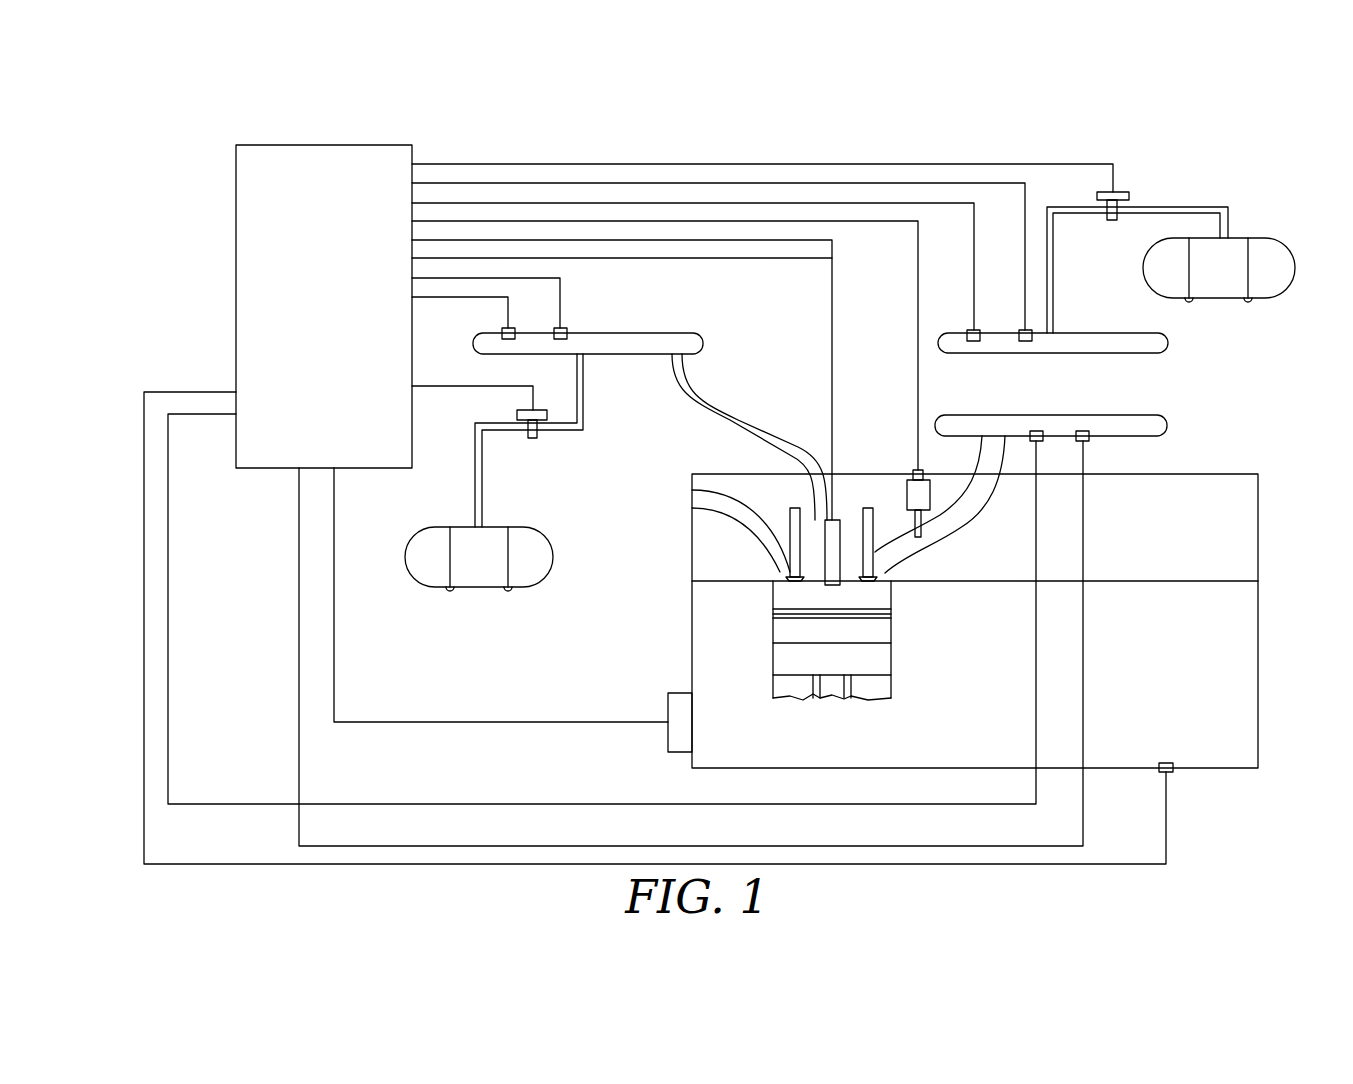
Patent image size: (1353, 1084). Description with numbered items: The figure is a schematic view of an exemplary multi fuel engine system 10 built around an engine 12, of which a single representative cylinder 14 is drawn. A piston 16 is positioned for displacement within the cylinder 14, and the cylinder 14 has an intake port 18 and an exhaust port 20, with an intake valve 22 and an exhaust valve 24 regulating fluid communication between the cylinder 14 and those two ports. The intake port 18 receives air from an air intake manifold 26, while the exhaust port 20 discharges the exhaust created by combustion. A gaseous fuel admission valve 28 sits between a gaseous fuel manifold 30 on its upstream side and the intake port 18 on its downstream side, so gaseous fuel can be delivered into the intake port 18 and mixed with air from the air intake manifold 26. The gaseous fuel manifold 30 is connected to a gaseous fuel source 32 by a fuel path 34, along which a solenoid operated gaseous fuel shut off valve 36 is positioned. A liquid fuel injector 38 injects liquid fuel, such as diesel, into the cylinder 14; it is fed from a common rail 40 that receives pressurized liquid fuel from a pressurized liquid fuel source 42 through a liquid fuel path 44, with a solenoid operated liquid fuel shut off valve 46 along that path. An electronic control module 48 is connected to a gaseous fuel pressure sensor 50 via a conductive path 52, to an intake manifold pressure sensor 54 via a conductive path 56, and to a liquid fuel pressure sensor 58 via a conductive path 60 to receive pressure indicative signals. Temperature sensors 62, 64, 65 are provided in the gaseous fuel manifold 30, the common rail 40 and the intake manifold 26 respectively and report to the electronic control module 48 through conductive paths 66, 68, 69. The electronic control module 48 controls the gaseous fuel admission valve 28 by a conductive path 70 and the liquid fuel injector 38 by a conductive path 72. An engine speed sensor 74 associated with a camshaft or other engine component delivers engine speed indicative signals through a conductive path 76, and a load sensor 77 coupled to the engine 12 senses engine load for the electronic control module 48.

The multi fuel engine system 10 is at (930, 150).
The engine 12 is at (1258, 692).
The cylinder 14 is at (893, 692).
The piston 16 is at (885, 622).
The intake port 18 is at (975, 512).
The exhaust port 20 is at (712, 505).
The intake valve 22 is at (893, 556).
The exhaust valve 24 is at (787, 557).
The air intake manifold 26 is at (1170, 432).
The gaseous fuel admission valve 28 is at (929, 490).
The gaseous fuel manifold 30 is at (1090, 333).
The gaseous fuel source 32 is at (1270, 252).
The fuel path 34 is at (1180, 207).
The gaseous fuel shut off valve 36 is at (1125, 192).
The liquid fuel injector 38 is at (835, 505).
The common rail 40 is at (632, 333).
The pressurized liquid fuel source 42 is at (428, 575).
The liquid fuel path 44 is at (475, 487).
The liquid fuel shut off valve 46 is at (535, 442).
The electronic control module 48 is at (306, 318).
The gaseous fuel pressure sensor 50 is at (972, 330).
The conductive path 52 is at (974, 300).
The intake manifold pressure sensor 54 is at (1042, 441).
The conductive path 56 is at (1037, 712).
The liquid fuel pressure sensor 58 is at (505, 329).
The conductive path 60 is at (445, 300).
The temperature sensor 62 is at (1024, 330).
The temperature sensor 64 is at (565, 329).
The temperature sensor 65 is at (1089, 441).
The conductive path 66 is at (1030, 218).
The conductive path 68 is at (555, 283).
The conductive path 69 is at (1083, 827).
The conductive path 70 is at (918, 330).
The conductive path 72 is at (625, 260).
The engine speed sensor 74 is at (668, 742).
The conductive path 76 is at (144, 692).
The load sensor 77 is at (1173, 765).